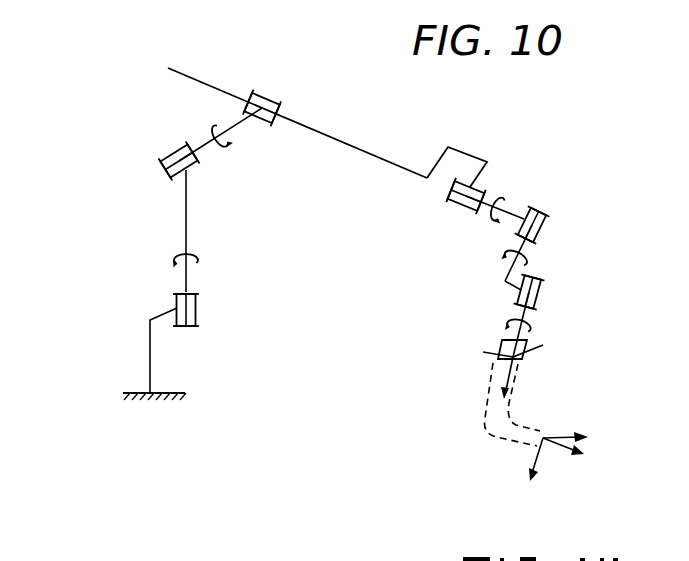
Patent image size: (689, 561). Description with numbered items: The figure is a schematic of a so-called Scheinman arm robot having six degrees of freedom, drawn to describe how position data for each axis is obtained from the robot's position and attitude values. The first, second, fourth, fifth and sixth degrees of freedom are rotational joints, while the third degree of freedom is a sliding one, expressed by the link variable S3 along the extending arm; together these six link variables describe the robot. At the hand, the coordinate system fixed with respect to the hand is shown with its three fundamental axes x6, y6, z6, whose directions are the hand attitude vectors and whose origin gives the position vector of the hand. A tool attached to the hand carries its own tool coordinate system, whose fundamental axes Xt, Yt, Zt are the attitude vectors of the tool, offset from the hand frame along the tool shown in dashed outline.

The third link variable S3 is at (368, 141).
The x axis of hand coordinate system x6 is at (540, 355).
The y axis of hand coordinate system y6 is at (481, 359).
The z axis of hand coordinate system z6 is at (504, 389).
The x axis of tool coordinate system Xt is at (576, 428).
The y axis of tool coordinate system Yt is at (533, 472).
The z axis of tool coordinate system Zt is at (576, 452).